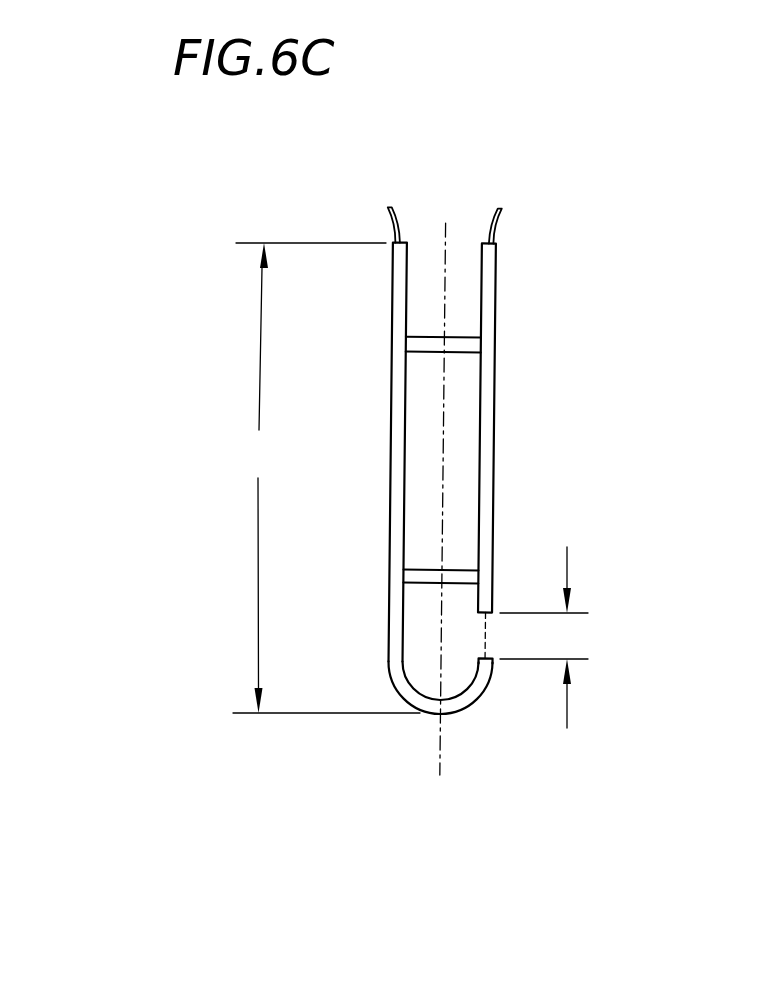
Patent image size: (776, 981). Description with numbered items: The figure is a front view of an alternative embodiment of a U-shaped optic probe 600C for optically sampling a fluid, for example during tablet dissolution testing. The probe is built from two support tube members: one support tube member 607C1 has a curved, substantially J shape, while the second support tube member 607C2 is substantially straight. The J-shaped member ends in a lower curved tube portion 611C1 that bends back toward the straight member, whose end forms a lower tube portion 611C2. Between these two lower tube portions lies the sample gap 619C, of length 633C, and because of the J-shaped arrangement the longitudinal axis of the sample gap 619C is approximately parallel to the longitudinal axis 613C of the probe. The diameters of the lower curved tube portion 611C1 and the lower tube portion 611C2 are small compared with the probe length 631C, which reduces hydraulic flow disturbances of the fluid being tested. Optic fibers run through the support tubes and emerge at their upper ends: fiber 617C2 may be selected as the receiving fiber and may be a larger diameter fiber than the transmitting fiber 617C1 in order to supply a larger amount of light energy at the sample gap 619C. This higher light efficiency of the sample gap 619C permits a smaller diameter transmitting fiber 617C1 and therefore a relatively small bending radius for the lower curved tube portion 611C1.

The U-shaped optic probe 600C is at (646, 314).
The support tube member 607C1 is at (392, 340).
The second support tube member 607C2 is at (495, 377).
The lower curved tube portion 611C1 is at (397, 690).
The lower tube portion 611C2 is at (494, 575).
The longitudinal axis 613C is at (452, 233).
The transmitting fiber 617C1 is at (387, 218).
The receiving fiber 617C2 is at (497, 220).
The sample gap 619C is at (486, 637).
The probe length 631C is at (324, 478).
The length of sample gap 633C is at (568, 637).